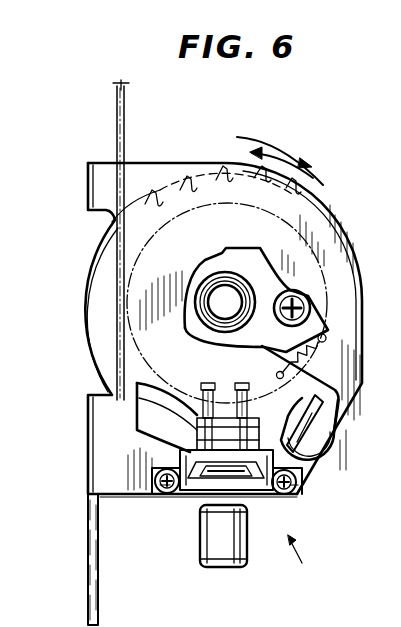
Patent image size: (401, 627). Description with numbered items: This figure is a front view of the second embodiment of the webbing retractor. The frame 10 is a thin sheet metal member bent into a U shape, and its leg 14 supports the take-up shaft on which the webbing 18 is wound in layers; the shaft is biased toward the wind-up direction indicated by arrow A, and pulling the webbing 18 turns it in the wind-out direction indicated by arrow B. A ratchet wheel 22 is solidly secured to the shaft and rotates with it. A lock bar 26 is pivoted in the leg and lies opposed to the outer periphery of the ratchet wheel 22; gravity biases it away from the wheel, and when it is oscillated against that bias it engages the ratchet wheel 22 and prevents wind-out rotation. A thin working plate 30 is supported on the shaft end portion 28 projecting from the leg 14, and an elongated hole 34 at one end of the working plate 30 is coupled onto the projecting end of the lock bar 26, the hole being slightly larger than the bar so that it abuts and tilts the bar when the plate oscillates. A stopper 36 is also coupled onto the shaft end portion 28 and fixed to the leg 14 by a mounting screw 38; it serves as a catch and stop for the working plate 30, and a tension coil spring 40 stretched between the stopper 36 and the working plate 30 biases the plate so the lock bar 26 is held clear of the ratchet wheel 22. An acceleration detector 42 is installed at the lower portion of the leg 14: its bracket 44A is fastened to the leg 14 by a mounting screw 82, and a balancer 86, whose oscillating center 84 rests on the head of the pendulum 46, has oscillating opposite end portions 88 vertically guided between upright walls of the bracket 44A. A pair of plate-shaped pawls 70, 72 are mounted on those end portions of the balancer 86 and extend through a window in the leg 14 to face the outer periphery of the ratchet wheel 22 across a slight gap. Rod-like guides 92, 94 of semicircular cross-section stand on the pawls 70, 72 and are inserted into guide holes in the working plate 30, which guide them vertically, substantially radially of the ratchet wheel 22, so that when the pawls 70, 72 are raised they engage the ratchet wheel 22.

The frame 10 is at (88, 186).
The leg 14 is at (168, 162).
The webbing 18 is at (124, 134).
The ratchet wheel 22 is at (235, 170).
The lock bar 26 is at (317, 463).
The shaft end portion 28 is at (214, 296).
The working plate 30 is at (258, 410).
The elongated hole 34 is at (320, 438).
The stopper 36 is at (279, 277).
The mounting screw 38 is at (311, 297).
The tension coil spring 40 is at (330, 348).
The acceleration detector 42 is at (305, 558).
The bracket 44A is at (235, 518).
The pendulum 46 is at (247, 548).
The pawl 70 is at (197, 414).
The pawl 72 is at (262, 430).
The mounting screw 82 is at (163, 493).
The oscillating center 84 is at (214, 495).
The balancer 86 is at (203, 480).
The oscillating opposite end portions 88 is at (270, 494).
The guide 92 is at (206, 383).
The guide 94 is at (243, 383).
The arrow A is at (318, 180).
The arrow B is at (268, 140).